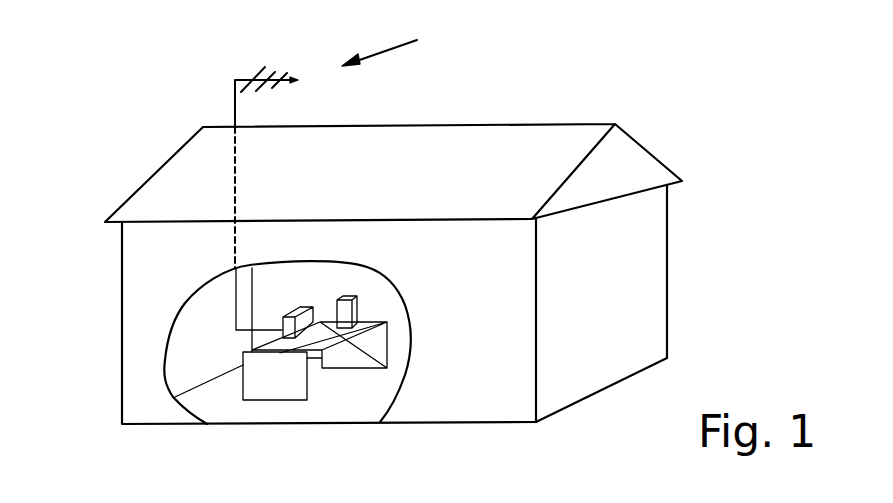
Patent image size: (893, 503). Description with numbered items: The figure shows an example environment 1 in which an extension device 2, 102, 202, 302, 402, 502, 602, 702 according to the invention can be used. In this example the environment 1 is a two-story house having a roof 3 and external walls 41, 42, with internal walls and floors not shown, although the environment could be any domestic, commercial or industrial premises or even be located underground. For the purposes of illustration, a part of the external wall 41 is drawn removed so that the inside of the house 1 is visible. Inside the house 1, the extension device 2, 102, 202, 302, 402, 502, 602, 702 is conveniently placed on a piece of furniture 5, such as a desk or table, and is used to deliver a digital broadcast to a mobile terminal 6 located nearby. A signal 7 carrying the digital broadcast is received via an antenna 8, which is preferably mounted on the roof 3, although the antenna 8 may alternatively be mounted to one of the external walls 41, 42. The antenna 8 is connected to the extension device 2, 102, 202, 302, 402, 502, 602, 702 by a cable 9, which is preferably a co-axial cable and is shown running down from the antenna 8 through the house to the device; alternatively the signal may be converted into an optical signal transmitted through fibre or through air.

The environment 1 is at (408, 213).
The extension device 2 is at (384, 372).
The extension device 102 is at (384, 372).
The extension device 202 is at (384, 372).
The extension device 302 is at (384, 372).
The extension device 402 is at (384, 372).
The extension device 502 is at (384, 372).
The extension device 602 is at (384, 372).
The extension device 702 is at (387, 368).
The roof 3 is at (443, 155).
The external wall 41 is at (142, 363).
The external wall 42 is at (647, 287).
The piece of furniture 5 is at (270, 378).
The mobile terminal 6 is at (350, 308).
The signal 7 is at (372, 55).
The antenna 8 is at (233, 97).
The cable 9 is at (236, 186).